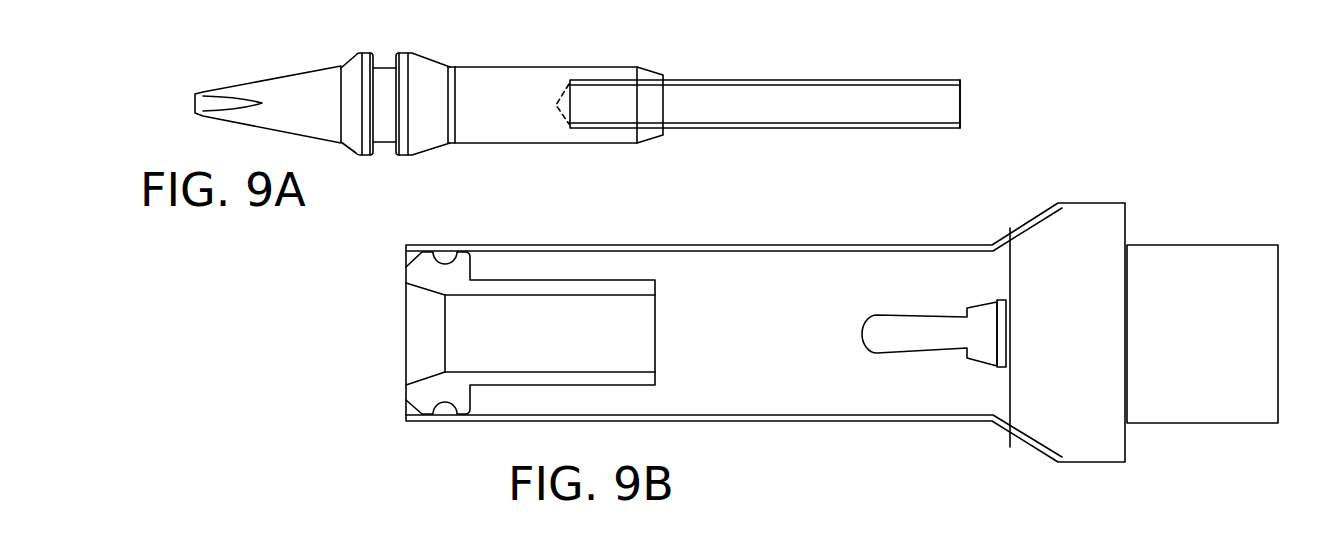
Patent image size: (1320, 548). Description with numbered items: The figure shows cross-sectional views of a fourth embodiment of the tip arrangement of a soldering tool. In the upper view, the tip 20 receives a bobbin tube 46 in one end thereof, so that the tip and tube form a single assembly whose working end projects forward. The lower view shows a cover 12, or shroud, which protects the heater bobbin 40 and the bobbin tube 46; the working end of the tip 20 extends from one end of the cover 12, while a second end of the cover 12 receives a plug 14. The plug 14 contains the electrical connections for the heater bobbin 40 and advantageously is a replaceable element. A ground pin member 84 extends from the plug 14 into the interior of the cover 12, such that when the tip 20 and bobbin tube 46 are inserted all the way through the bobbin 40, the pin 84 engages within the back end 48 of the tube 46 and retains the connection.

In FIG. 9B, the cover 12 is at (748, 248).
In FIG. 9B, the plug 14 is at (1198, 268).
In FIG. 9A, the tip 20 is at (307, 83).
In FIG. 9B, the heater bobbin 40 is at (422, 397).
In FIG. 9A, the bobbin tube 46 is at (779, 78).
In FIG. 9A, the back end 48 is at (950, 102).
In FIG. 9B, the ground pin member 84 is at (888, 333).